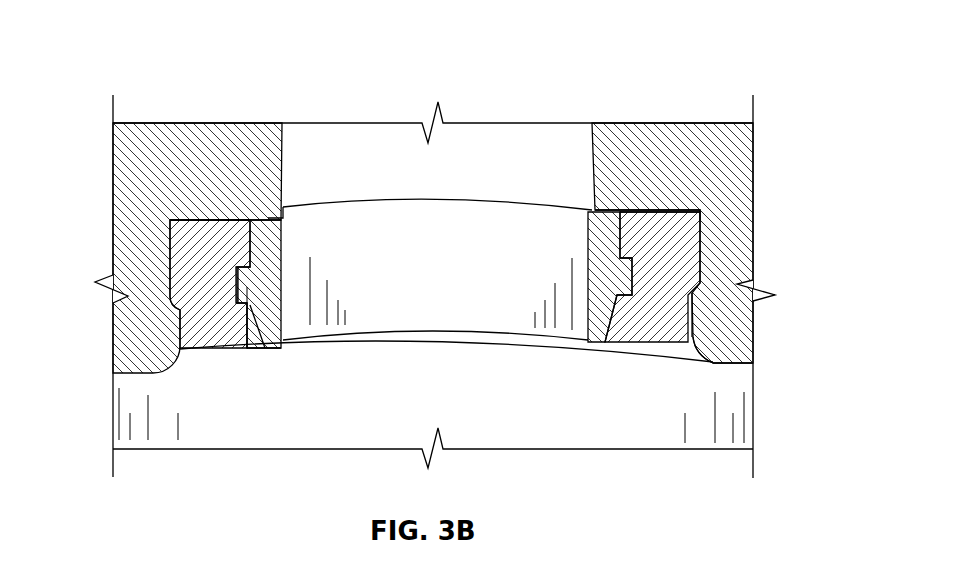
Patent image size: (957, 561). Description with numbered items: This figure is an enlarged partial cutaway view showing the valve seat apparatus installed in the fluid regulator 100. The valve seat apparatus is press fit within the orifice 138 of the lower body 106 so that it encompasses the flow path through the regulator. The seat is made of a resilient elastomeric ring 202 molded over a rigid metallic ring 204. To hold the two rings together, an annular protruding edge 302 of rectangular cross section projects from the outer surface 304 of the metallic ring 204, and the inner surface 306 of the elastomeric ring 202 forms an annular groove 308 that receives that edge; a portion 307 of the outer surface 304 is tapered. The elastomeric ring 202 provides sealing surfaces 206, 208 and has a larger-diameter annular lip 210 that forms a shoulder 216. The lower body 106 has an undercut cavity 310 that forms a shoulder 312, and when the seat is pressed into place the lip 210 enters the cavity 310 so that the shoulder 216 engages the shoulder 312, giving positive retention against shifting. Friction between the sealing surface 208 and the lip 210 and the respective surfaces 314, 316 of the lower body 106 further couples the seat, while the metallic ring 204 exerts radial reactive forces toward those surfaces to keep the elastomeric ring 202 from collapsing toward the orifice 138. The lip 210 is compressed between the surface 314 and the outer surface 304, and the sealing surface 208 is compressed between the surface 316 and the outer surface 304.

The fluid regulator 100 is at (106, 62).
The lower body 106 is at (126, 236).
The orifice 138 is at (470, 184).
The elastomeric ring 202 is at (180, 330).
The metallic ring 204 is at (283, 213).
The sealing surface 206 is at (253, 352).
The sealing surface 208 is at (688, 300).
The annular lip 210 is at (190, 248).
The shoulder 216 is at (692, 297).
The annular protruding edge 302 is at (247, 350).
The outer surface 304 is at (249, 250).
The inner surface 306 is at (250, 236).
The tapered portion 307 is at (262, 331).
The annular groove 308 is at (236, 277).
The cavity 310 is at (703, 216).
The shoulder 312 is at (692, 293).
The surface 314 is at (703, 240).
The surface 316 is at (692, 331).